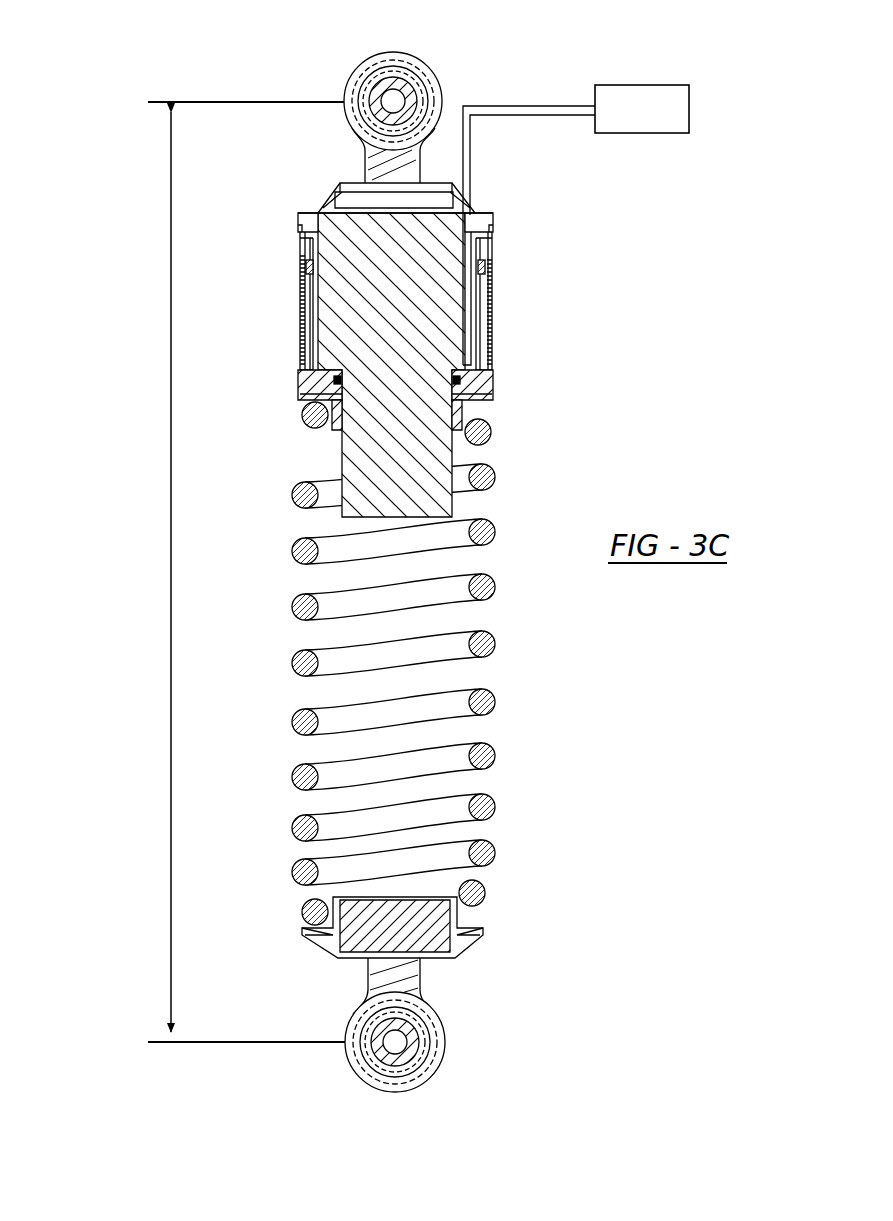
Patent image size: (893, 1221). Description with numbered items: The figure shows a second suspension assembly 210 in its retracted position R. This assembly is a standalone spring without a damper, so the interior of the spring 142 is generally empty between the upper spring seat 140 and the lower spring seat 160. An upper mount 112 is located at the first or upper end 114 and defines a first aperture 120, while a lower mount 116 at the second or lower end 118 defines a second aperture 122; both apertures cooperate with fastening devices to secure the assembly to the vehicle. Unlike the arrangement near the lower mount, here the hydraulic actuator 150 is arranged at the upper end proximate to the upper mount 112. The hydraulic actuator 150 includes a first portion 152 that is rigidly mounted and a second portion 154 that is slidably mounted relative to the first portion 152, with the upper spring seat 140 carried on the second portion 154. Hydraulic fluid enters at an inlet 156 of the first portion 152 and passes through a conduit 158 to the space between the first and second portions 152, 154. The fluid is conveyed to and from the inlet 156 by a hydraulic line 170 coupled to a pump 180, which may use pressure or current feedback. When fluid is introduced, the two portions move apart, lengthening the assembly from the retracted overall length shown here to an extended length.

The second suspension assembly 210 is at (100, 92).
The upper mount 112 is at (424, 62).
The first or upper end 114 is at (345, 82).
The first aperture 120 is at (400, 98).
The hydraulic line 170 is at (557, 106).
The pump 180 is at (689, 105).
The inlet 156 is at (470, 214).
The first portion 152 is at (493, 222).
The conduit 158 is at (468, 278).
The hydraulic actuator 150 is at (546, 296).
The second portion 154 is at (488, 385).
The upper spring seat 140 is at (490, 410).
The spring 142 is at (485, 750).
The lower spring seat 160 is at (470, 918).
The second aperture 122 is at (398, 1043).
The lower mount 116 is at (438, 1053).
The second or lower end 118 is at (416, 1080).
The retracted position R is at (320, 216).